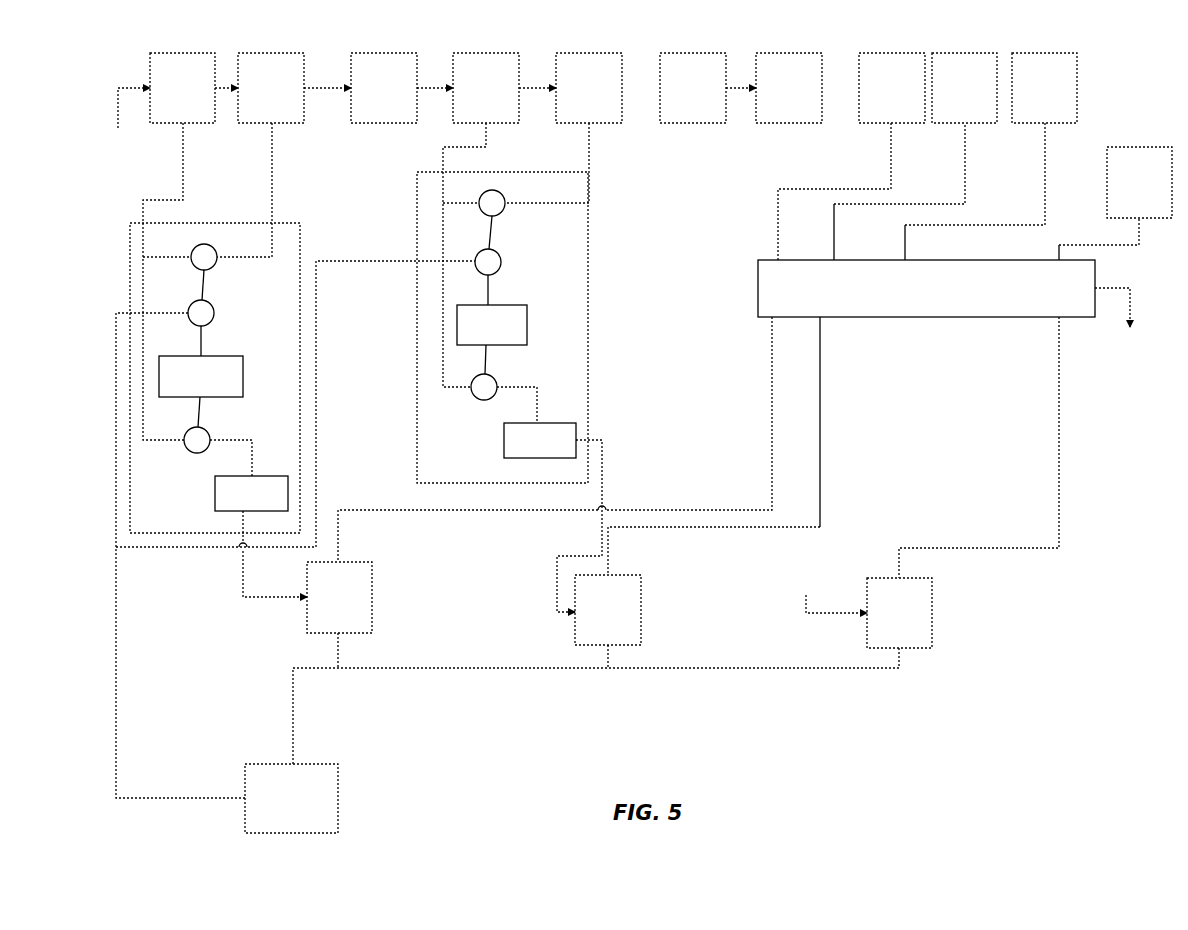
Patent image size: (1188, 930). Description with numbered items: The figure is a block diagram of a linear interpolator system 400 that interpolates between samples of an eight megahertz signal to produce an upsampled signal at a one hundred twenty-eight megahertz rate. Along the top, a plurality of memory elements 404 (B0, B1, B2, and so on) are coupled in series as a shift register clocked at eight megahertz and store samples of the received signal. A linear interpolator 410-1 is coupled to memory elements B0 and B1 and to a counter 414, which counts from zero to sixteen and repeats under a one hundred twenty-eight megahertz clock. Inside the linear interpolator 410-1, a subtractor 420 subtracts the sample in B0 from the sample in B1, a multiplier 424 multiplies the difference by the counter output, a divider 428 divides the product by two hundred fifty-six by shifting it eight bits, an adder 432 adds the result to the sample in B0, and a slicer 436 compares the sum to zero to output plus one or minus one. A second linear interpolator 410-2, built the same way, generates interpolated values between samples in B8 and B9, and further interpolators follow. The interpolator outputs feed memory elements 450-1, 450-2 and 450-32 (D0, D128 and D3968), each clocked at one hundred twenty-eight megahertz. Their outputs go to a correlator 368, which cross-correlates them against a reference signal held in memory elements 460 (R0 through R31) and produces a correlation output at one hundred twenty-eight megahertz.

The linear interpolator system 400 is at (907, 724).
The memory elements 404 is at (231, 30).
The memory elements 460 is at (959, 27).
The linear interpolator 410-1 is at (300, 275).
The linear interpolator 410-2 is at (588, 300).
The subtractor 420 is at (212, 268).
The multiplier 424 is at (211, 323).
The divider 428 is at (225, 397).
The adder 432 is at (200, 453).
The slicer 436 is at (228, 511).
The correlator 368 is at (758, 288).
The memory element 450-1 is at (372, 598).
The memory element 450-2 is at (641, 610).
The memory element 450-32 is at (932, 618).
The counter 414 is at (338, 810).